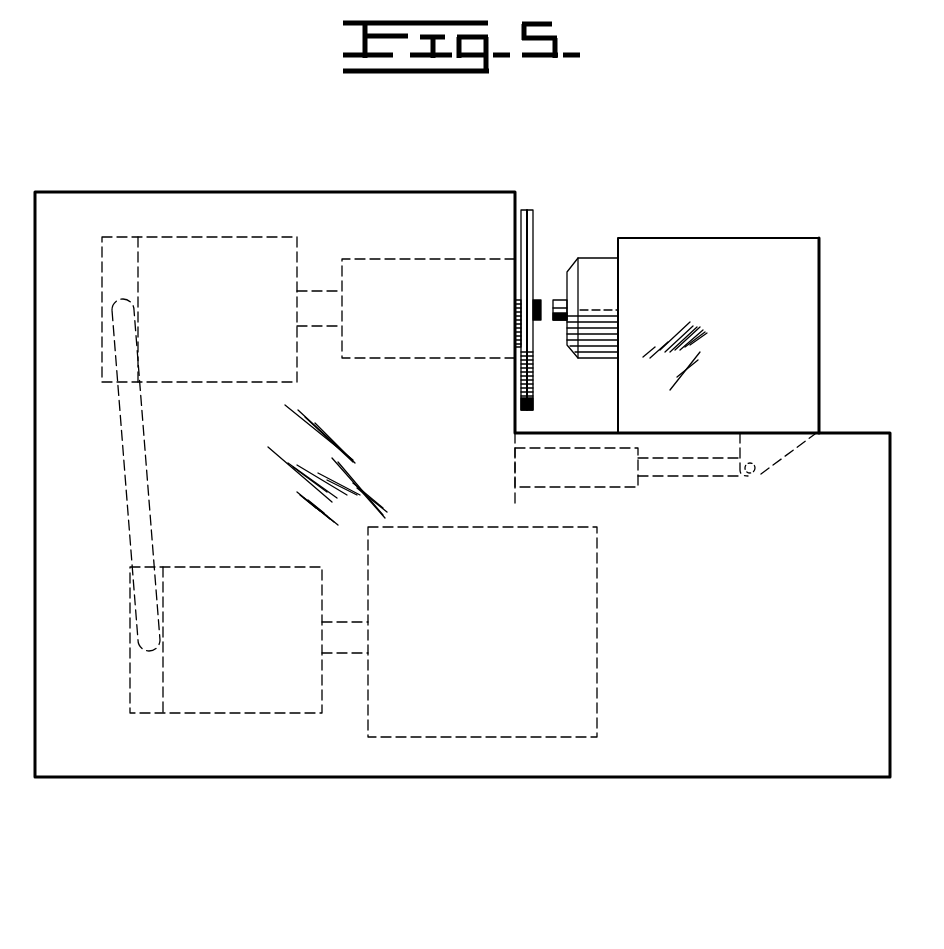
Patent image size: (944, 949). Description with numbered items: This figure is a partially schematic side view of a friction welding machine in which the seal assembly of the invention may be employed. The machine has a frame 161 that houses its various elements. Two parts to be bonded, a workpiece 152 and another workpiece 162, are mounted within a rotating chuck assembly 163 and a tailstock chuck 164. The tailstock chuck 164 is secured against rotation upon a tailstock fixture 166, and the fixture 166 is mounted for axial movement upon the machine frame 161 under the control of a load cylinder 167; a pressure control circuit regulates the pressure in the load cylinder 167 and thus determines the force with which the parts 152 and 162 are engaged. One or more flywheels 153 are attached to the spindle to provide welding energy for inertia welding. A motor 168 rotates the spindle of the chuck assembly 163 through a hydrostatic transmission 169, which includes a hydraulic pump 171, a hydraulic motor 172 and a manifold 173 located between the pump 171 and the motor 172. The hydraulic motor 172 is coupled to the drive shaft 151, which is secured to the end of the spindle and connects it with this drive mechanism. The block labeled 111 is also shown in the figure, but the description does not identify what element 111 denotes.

The control unit 111 is at (428, 280).
The drive shaft 151 is at (297, 300).
The workpiece 152 is at (538, 302).
The flywheel 153 is at (527, 214).
The frame 161 is at (672, 762).
The workpiece 162 is at (560, 322).
The chuck assembly 163 is at (540, 365).
The tailstock chuck 164 is at (603, 290).
The tailstock fixture 166 is at (749, 252).
The load cylinder 167 is at (612, 465).
The motor 168 is at (386, 720).
The hydrostatic transmission 169 is at (140, 475).
The hydraulic pump 171 is at (268, 702).
The hydraulic motor 172 is at (268, 367).
The manifold 173 is at (128, 513).